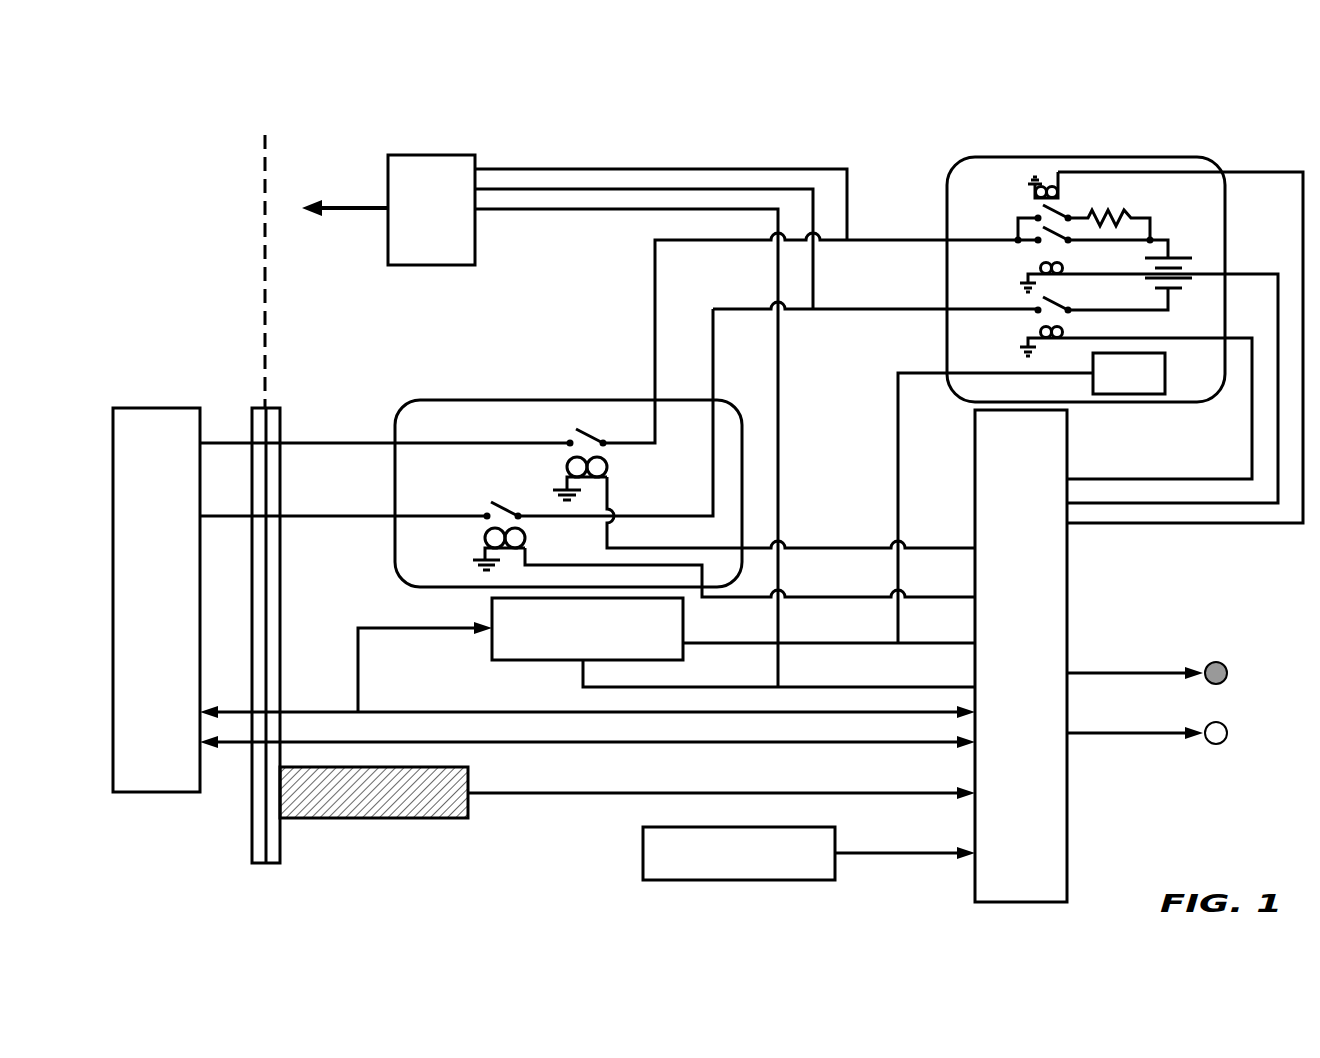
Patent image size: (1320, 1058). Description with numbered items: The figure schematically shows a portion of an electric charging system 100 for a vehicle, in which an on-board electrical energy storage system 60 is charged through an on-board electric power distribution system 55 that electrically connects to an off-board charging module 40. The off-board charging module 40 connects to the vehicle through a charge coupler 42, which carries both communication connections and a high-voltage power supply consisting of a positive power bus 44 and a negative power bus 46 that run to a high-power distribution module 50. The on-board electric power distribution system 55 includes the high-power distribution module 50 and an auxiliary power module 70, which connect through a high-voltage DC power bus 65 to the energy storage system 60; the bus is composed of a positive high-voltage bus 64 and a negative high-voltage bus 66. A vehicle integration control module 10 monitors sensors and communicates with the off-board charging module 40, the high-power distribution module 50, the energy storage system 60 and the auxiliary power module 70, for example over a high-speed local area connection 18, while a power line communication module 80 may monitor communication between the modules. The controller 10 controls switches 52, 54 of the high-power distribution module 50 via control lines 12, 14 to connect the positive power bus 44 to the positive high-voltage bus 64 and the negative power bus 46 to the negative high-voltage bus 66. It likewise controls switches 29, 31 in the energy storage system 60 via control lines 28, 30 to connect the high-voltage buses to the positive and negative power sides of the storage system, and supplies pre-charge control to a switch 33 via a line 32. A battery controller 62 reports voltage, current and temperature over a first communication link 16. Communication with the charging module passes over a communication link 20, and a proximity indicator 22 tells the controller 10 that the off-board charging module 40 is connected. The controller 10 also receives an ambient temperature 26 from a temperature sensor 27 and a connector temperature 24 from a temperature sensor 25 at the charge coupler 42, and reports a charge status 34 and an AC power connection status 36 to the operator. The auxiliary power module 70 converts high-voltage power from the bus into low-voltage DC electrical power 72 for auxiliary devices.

The electric charging system 100 is at (742, 115).
The vehicle integration control module 10 is at (1007, 672).
The control line 12 is at (933, 544).
The control line 14 is at (933, 592).
The first communication link 16 is at (933, 637).
The high-speed local area connection 18 is at (933, 680).
The communication link 20 is at (710, 714).
The proximity indicator 22 is at (875, 744).
The connector temperature 24 is at (537, 795).
The temperature sensor 25 is at (395, 820).
The ambient temperature 26 is at (870, 855).
The temperature sensor 27 is at (643, 855).
The control line 28 is at (1252, 440).
The switch 29 is at (1040, 306).
The control line 30 is at (1278, 470).
The switch 31 is at (1046, 242).
The line 32 is at (1180, 523).
The switch 33 is at (1062, 206).
The charge status 34 is at (1222, 663).
The AC power connection status 36 is at (1222, 723).
The off-board charging module 40 is at (142, 617).
The charge coupler 42 is at (252, 815).
The positive power bus 44 is at (385, 430).
The negative power bus 46 is at (352, 511).
The high-power distribution module 50 is at (557, 400).
The switch 52 is at (566, 440).
The switch 54 is at (485, 504).
The on-board electric power distribution system 55 is at (634, 326).
The on-board electrical energy storage system 60 is at (1006, 157).
The battery controller 62 is at (1167, 378).
The positive high-voltage bus 64 is at (655, 280).
The high-voltage DC power bus 65 is at (679, 293).
The negative high-voltage bus 66 is at (713, 350).
The auxiliary power module 70 is at (433, 155).
The low-voltage DC electrical power 72 is at (358, 206).
The power line communication module 80 is at (490, 652).